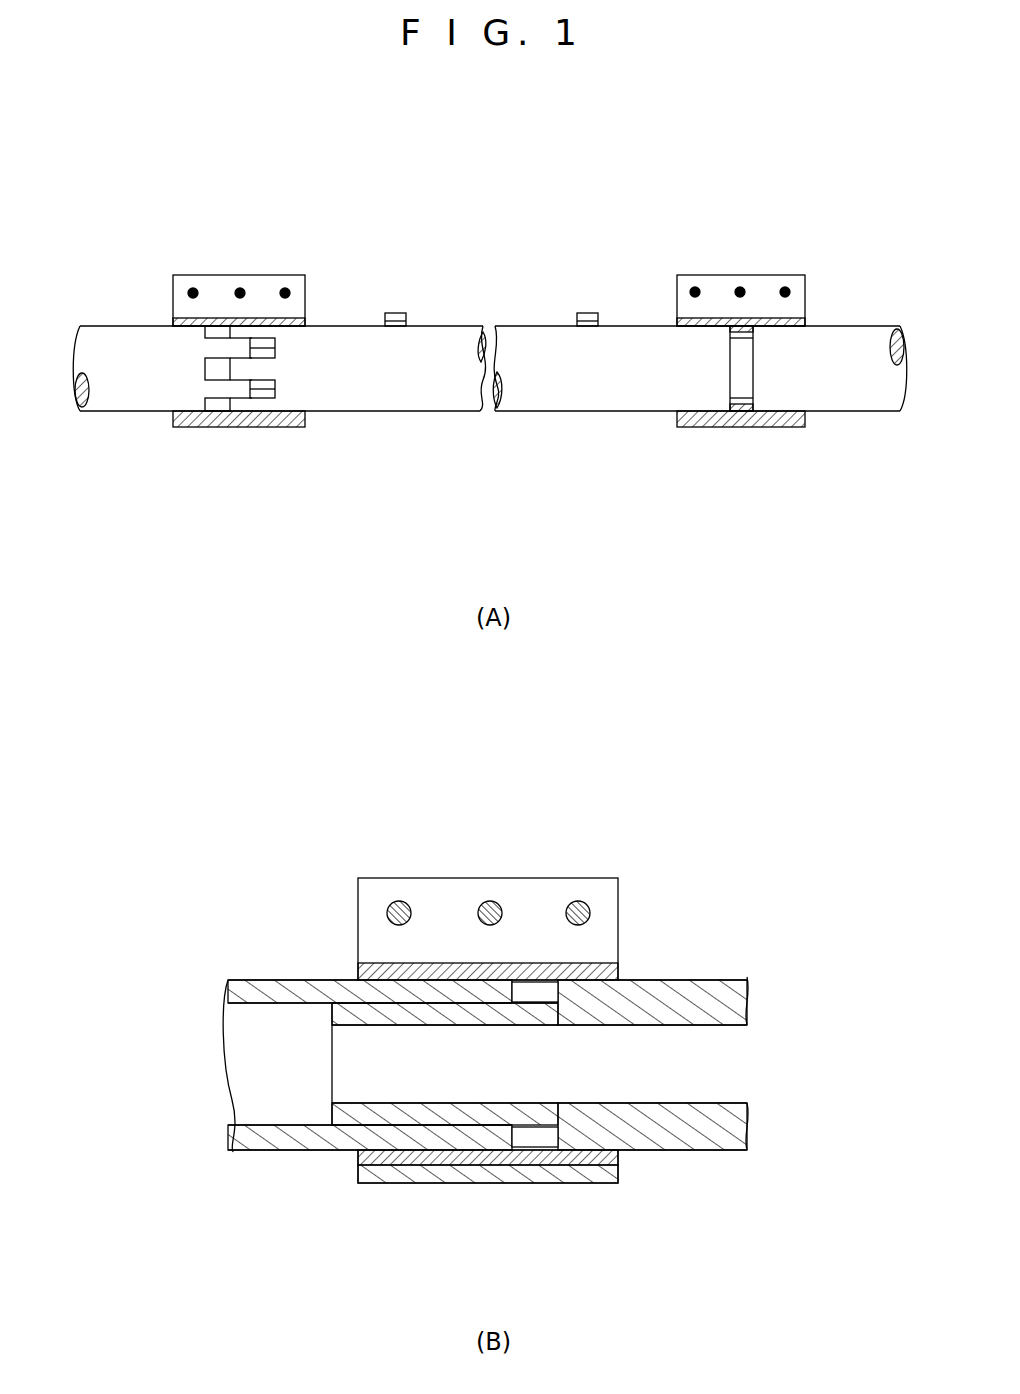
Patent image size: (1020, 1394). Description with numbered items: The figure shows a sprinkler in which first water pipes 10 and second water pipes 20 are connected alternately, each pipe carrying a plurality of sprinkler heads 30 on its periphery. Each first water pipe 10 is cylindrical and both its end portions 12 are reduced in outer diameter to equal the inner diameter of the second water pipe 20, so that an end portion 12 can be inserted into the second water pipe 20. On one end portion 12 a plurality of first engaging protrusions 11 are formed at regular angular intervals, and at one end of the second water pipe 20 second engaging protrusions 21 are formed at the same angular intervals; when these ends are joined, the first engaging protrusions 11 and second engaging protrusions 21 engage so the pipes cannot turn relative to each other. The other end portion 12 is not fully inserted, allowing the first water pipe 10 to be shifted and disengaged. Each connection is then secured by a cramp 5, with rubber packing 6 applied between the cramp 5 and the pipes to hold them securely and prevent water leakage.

The cramp 5 is at (185, 278).
The rubber packing 6 is at (392, 1165).
The first water pipe 10 is at (592, 392).
The first engaging protrusion 11 is at (260, 367).
The end portion 12 is at (740, 382).
The second water pipe 20 is at (104, 397).
The second engaging protrusion 21 is at (213, 388).
The sprinkler head 30 is at (392, 313).